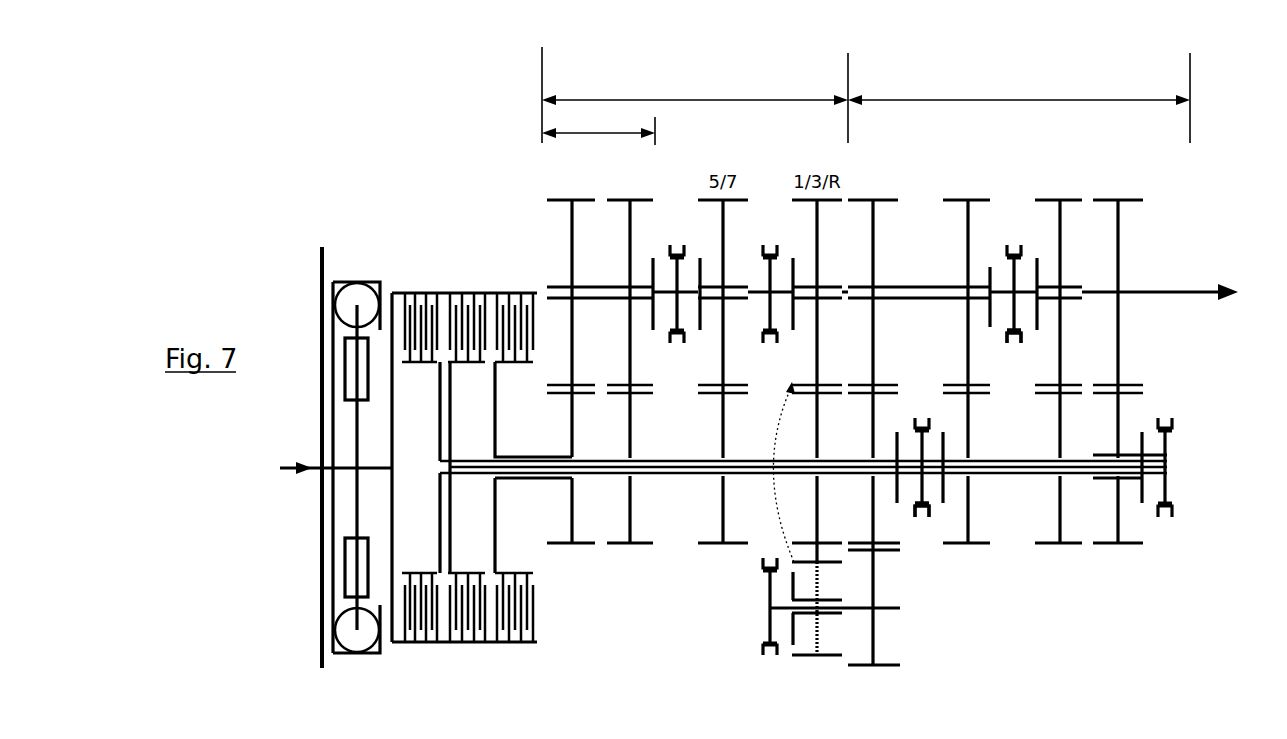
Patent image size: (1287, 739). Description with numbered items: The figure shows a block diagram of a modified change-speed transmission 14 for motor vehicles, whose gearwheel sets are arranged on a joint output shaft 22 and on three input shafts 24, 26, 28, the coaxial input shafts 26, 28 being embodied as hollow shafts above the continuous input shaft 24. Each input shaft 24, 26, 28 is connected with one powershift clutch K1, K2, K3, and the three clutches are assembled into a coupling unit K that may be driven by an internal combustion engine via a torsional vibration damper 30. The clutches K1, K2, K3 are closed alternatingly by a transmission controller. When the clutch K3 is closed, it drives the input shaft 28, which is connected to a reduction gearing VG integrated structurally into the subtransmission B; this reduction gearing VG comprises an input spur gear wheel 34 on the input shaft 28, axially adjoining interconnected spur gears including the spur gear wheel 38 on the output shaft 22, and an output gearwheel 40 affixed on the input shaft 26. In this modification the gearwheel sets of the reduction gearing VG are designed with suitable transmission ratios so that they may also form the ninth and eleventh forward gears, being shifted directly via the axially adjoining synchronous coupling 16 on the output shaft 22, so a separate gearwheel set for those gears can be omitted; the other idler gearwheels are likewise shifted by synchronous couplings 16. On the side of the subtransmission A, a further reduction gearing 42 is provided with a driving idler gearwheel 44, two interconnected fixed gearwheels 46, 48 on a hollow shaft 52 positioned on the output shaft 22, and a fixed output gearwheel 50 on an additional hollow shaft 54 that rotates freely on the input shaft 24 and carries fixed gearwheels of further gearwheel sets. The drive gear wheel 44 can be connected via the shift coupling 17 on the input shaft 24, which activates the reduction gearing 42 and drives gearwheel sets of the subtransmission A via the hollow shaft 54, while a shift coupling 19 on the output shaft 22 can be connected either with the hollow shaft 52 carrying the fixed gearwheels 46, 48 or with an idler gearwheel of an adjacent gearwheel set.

The torsional vibration damper 30 is at (300, 672).
The coupling unit K is at (528, 196).
The powershift clutch K1 is at (430, 288).
The powershift clutch K2 is at (470, 288).
The powershift clutch K3 is at (503, 288).
The input shaft 28 is at (546, 456).
The input shaft 26 is at (676, 476).
The input spur gear wheel 34 is at (556, 547).
The spur gear wheel 38 is at (628, 210).
The output gearwheel 40 is at (612, 547).
The driving idler gearwheel 44 is at (876, 418).
The fixed gearwheel 46 is at (873, 228).
The hollow shaft 52 is at (896, 300).
The fixed gearwheel 48 is at (968, 226).
The fixed output gearwheel 50 is at (970, 506).
The reduction gearing 42 is at (924, 212).
The hollow shaft 54 is at (1034, 480).
The change-speed transmission 14 is at (1095, 582).
The synchronous coupling 16 is at (677, 236).
The input shaft 24 is at (932, 455).
The shift coupling 17 is at (921, 526).
The output shaft 22 is at (1022, 268).
The shift coupling 19 is at (1014, 352).
The subtransmission B is at (695, 95).
The subtransmission A is at (1019, 98).
The reduction gearing VG is at (598, 124).